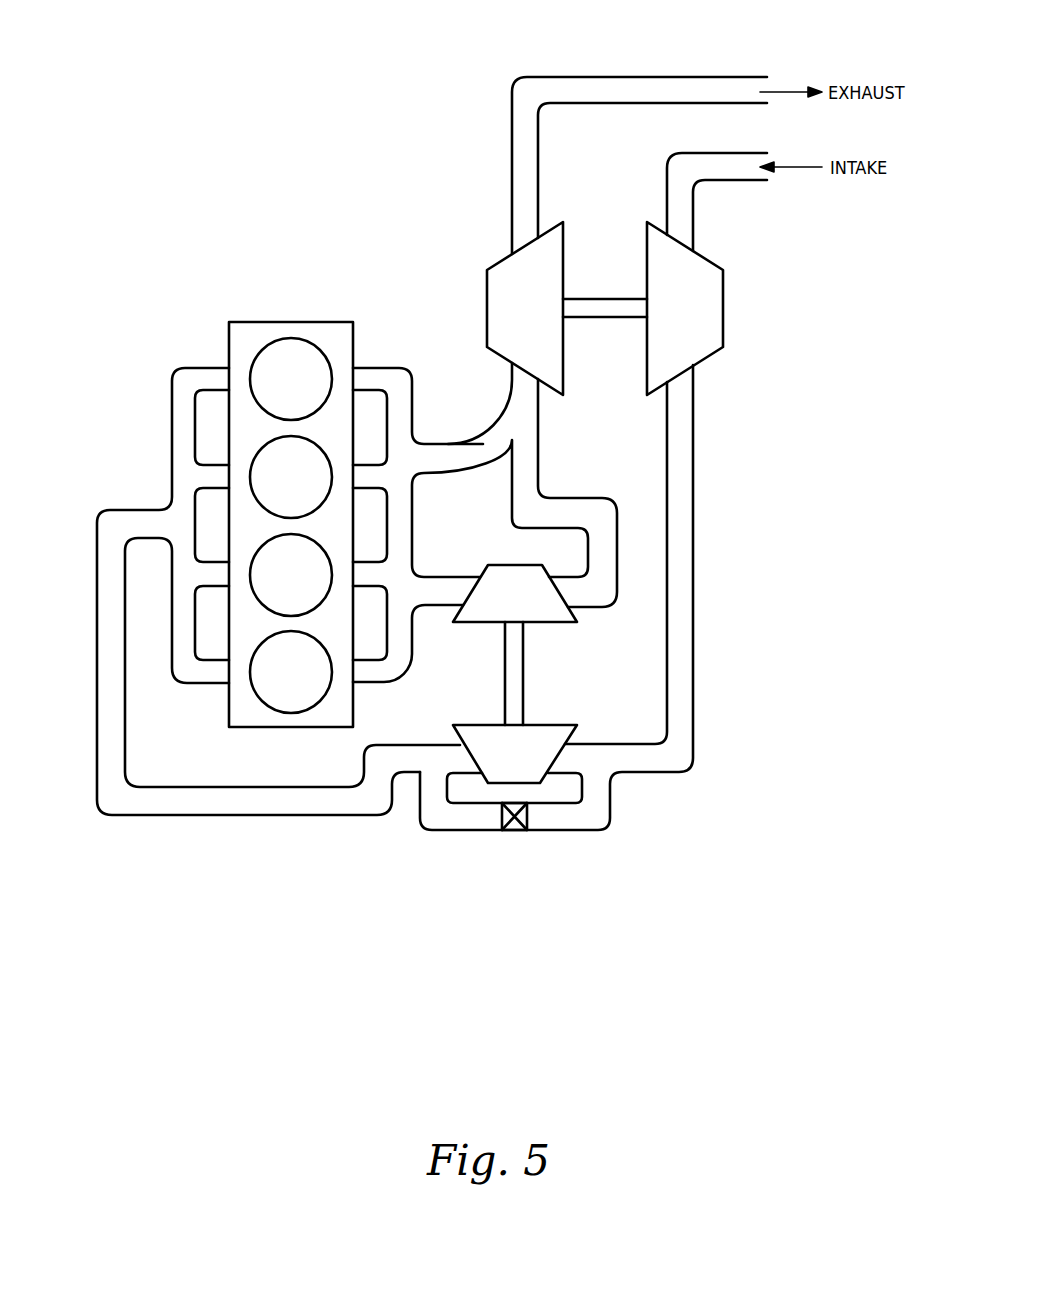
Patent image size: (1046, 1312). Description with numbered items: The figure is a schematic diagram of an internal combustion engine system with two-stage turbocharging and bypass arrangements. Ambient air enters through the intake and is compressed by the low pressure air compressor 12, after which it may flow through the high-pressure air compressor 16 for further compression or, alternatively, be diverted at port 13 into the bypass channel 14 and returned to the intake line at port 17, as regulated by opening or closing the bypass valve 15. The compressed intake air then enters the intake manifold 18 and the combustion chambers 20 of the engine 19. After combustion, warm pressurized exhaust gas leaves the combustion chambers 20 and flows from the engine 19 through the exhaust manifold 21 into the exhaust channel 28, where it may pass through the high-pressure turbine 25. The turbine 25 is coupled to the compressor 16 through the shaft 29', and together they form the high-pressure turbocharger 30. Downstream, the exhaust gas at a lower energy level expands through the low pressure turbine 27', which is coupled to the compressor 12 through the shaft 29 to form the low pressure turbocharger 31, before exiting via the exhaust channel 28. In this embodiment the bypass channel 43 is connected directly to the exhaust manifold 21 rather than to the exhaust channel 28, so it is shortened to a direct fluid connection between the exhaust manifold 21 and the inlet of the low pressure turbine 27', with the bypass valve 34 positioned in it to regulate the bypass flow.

The low pressure air compressor 12 is at (593, 491).
The port 13 is at (593, 773).
The bypass channel 14 is at (573, 820).
The bypass valve 15 is at (515, 832).
The high-pressure air compressor 16 is at (515, 754).
The port 17 is at (433, 773).
The intake manifold 18 is at (178, 522).
The engine 19 is at (244, 333).
The combustion chambers 20 is at (291, 525).
The exhaust manifold 21 is at (400, 537).
The high-pressure turbine 25 is at (515, 593).
The low pressure turbine 27' is at (525, 308).
The exhaust channel 28 is at (572, 85).
The shaft 29 is at (605, 269).
The shaft 29' is at (551, 673).
The high-pressure turbocharger 30 is at (568, 661).
The low pressure turbocharger 31 is at (586, 240).
The bypass valve 34 is at (477, 440).
The bypass channel 43 is at (420, 458).